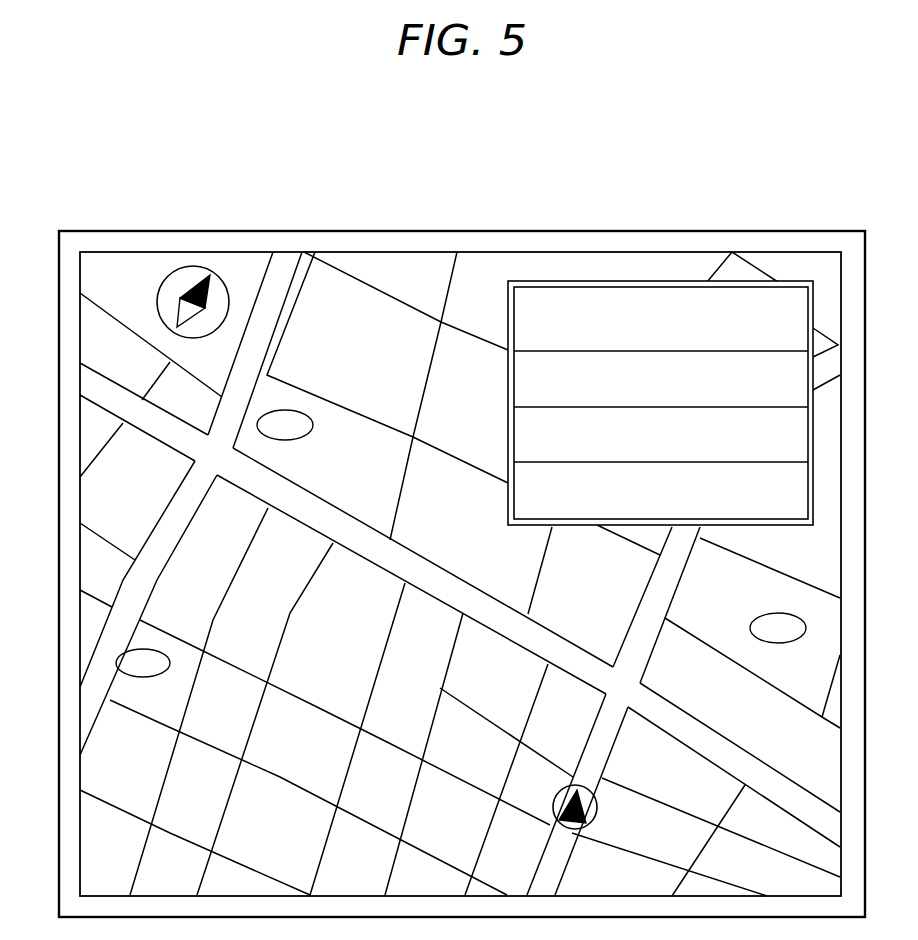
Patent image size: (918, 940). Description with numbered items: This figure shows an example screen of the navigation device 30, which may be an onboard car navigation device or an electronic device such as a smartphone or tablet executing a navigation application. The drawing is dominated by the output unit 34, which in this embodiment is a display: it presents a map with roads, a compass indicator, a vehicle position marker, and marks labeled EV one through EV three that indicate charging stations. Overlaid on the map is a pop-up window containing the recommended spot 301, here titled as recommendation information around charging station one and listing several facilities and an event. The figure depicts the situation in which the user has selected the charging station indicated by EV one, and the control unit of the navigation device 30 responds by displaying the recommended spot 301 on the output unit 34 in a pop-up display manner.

The navigation device 30 is at (610, 177).
The output unit 34 is at (365, 243).
The recommended spot 301 is at (783, 288).